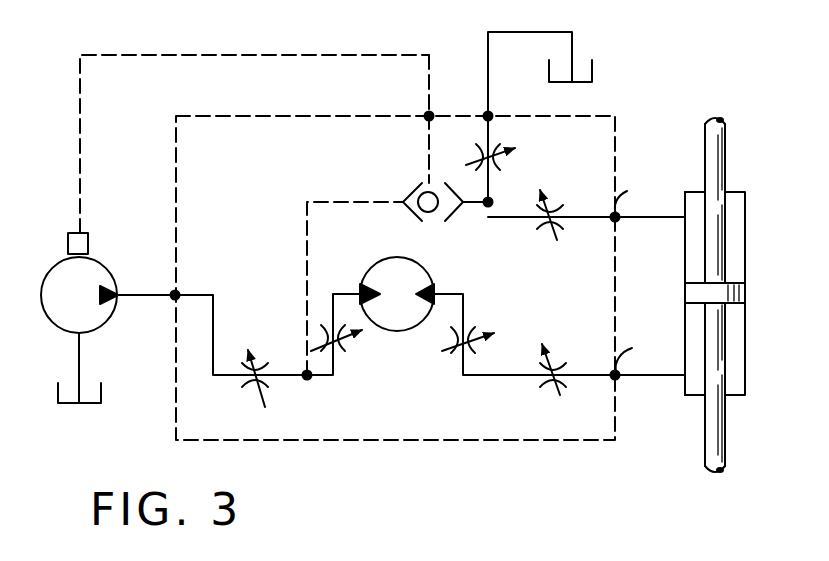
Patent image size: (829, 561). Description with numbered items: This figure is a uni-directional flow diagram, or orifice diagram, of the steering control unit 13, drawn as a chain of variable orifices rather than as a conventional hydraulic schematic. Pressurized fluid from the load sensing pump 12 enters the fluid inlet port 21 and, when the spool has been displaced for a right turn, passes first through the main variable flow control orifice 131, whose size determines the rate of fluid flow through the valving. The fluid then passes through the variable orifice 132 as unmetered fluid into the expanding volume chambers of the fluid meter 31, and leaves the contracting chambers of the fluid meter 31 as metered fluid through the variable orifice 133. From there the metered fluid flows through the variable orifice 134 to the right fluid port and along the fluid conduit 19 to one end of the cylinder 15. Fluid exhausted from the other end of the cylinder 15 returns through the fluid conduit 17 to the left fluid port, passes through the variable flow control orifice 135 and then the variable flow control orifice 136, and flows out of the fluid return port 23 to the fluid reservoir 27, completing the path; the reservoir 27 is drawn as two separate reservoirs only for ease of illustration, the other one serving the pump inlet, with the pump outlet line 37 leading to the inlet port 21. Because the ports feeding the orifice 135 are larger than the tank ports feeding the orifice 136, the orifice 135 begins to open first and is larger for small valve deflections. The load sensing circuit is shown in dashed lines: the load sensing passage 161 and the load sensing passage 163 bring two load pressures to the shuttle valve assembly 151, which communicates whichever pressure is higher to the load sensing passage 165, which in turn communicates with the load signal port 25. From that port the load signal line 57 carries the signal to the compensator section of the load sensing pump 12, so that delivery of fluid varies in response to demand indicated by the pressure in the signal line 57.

The load sensing pump 12 is at (122, 262).
The fluid reservoir 27 is at (96, 404).
The pump supply line 37 is at (148, 300).
The fluid inlet port 21 is at (177, 292).
The load signal line 57 is at (326, 57).
The load sensing passage 165 is at (432, 143).
The load signal port 25 is at (427, 119).
The fluid return port 23 is at (491, 114).
The steering control unit 13 is at (624, 132).
The load sensing passage 161 is at (305, 225).
The shuttle valve assembly 151 is at (411, 181).
The load sensing passage 163 is at (470, 205).
The fluid meter 31 is at (366, 270).
The main variable flow control orifice 131 is at (266, 351).
The variable orifice 132 is at (354, 351).
The variable orifice 133 is at (442, 357).
The variable orifice 134 is at (563, 355).
The variable flow control orifice 135 is at (544, 236).
The variable flow control orifice 136 is at (510, 164).
The fluid conduit 17 is at (655, 219).
The fluid conduit 19 is at (652, 377).
The cylinder 15 is at (757, 190).